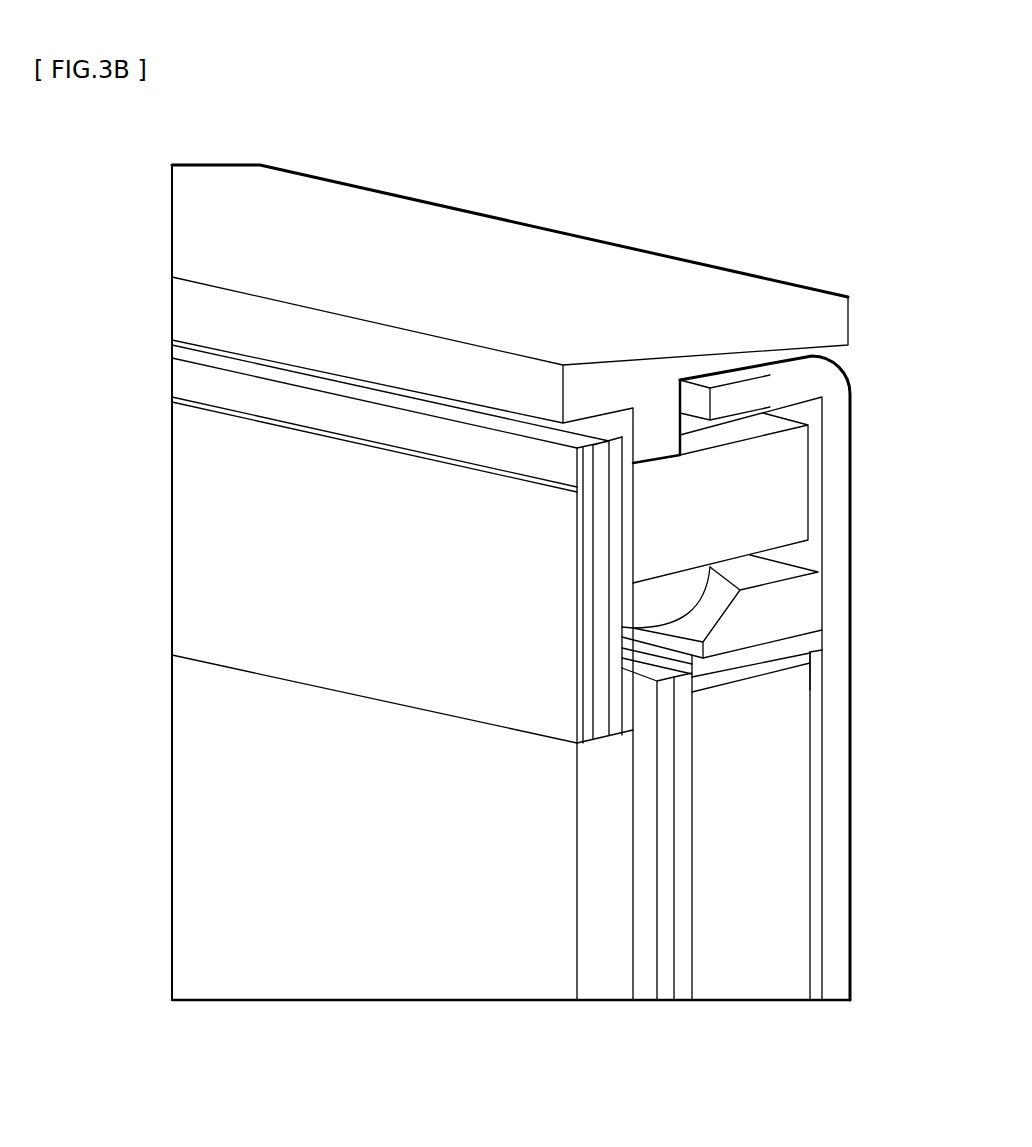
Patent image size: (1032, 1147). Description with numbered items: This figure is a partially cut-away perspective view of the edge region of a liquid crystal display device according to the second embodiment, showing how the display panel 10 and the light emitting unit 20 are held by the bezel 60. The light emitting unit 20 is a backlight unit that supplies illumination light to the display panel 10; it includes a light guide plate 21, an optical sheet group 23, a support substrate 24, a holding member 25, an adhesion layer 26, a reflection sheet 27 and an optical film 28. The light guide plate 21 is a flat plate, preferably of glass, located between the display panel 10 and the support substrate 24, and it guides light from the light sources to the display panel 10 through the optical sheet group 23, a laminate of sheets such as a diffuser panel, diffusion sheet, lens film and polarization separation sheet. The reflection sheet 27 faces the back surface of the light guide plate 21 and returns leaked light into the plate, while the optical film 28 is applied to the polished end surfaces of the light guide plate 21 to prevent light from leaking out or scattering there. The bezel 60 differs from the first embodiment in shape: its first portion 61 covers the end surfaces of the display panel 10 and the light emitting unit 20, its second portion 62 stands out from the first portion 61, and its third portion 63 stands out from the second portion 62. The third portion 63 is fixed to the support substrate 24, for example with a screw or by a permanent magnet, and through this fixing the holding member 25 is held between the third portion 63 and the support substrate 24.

The display panel 10 is at (603, 990).
The light emitting unit 20 is at (716, 785).
The light guide plate 21 is at (742, 856).
The optical sheet group 23 is at (693, 1009).
The support substrate 24 is at (842, 863).
The holding member 25 is at (798, 602).
The adhesion layer 26 is at (775, 652).
The reflection sheet 27 is at (815, 808).
The optical film 28 is at (803, 668).
The bezel 60 is at (510, 368).
The first portion 61 is at (660, 380).
The second portion 62 is at (663, 427).
The third portion 63 is at (785, 465).